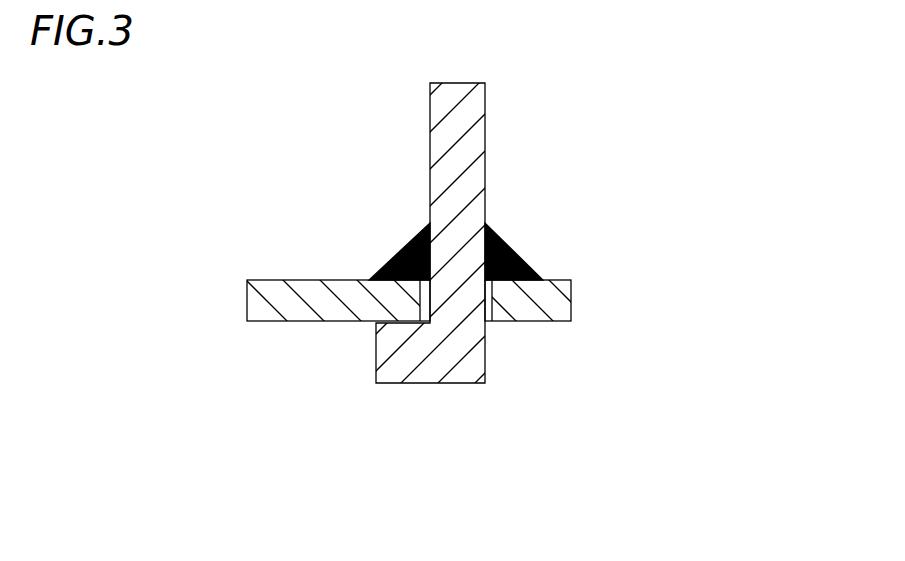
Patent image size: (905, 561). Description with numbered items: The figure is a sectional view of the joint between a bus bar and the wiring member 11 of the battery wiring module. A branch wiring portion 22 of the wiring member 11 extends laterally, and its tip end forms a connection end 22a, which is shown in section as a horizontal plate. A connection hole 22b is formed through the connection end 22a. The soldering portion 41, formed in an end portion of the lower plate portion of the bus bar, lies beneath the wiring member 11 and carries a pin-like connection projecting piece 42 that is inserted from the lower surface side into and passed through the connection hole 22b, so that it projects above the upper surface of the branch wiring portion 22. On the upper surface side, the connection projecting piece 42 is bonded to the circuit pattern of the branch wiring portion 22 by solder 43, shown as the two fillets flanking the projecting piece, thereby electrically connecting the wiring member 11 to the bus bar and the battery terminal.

The wiring member 11 is at (398, 282).
The branch wiring portion 22 is at (452, 282).
The connection end 22a is at (558, 281).
The connection hole 22b is at (488, 304).
The soldering portion 41 is at (461, 275).
The connection projecting piece 42 is at (485, 137).
The solder 43 is at (510, 240).